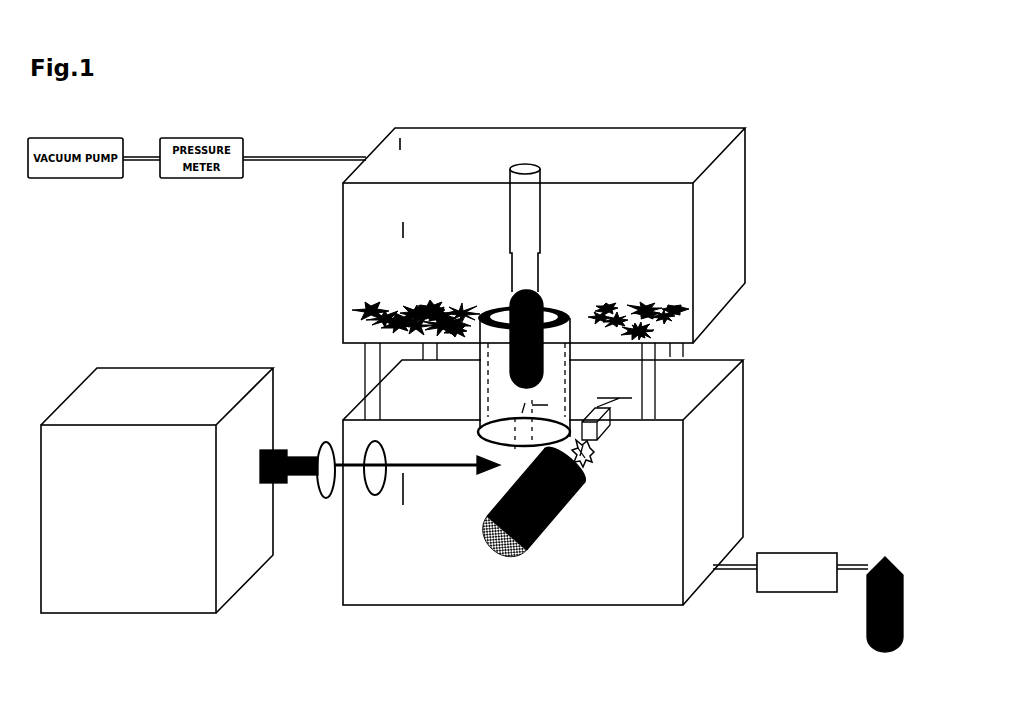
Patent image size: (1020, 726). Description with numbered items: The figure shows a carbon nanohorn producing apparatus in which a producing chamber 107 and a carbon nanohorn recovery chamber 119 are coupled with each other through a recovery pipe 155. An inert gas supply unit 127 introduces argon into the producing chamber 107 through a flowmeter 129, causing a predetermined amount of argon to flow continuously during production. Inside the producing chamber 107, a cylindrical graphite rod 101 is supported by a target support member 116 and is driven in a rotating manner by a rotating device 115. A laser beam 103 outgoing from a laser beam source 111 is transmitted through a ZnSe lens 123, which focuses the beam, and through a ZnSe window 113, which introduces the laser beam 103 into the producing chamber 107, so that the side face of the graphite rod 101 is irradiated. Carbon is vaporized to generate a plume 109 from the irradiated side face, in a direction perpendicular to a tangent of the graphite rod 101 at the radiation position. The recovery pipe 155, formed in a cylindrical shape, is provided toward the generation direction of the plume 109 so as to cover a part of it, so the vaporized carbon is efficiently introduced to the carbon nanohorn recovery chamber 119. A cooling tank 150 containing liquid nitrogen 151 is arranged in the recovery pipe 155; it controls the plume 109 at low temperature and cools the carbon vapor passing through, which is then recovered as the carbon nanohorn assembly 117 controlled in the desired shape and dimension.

The graphite rod 101 is at (485, 543).
The laser beam 103 is at (405, 473).
The producing chamber 107 is at (743, 520).
The plume 109 is at (533, 408).
The laser beam source 111 is at (175, 413).
The ZnSe window 113 is at (363, 482).
The rotating device 115 is at (598, 432).
The target support member 116 is at (582, 443).
The carbon nanohorn assembly 117 is at (377, 303).
The carbon nanohorn recovery chamber 119 is at (343, 287).
The ZnSe lens 123 is at (325, 450).
The inert gas supply unit 127 is at (868, 647).
The flowmeter 129 is at (790, 572).
The cooling tank 150 is at (533, 158).
The liquid nitrogen 151 is at (543, 297).
The recovery pipe 155 is at (480, 384).